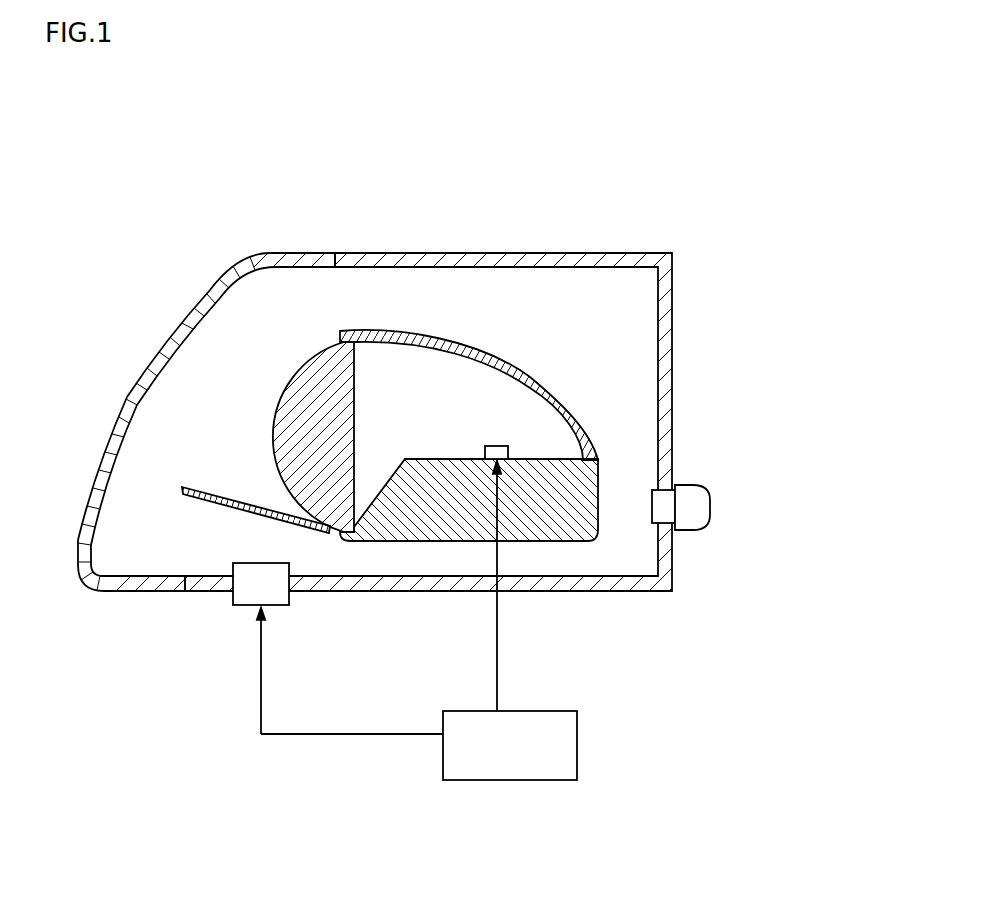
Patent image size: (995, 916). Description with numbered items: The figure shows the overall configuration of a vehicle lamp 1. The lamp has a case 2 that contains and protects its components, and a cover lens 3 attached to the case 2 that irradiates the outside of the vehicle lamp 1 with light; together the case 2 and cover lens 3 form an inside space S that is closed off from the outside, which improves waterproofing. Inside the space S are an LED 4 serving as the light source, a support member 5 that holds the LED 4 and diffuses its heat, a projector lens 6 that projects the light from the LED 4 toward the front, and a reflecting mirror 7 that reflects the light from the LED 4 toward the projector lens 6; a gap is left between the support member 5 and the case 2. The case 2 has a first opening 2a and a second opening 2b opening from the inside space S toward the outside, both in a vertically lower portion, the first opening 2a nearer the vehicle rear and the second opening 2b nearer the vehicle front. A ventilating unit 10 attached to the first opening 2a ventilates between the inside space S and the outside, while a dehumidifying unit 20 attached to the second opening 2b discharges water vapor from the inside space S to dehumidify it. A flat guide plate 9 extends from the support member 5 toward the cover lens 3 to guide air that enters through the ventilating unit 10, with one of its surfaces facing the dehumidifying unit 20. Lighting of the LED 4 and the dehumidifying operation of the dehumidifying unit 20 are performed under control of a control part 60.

The vehicle lamp 1 is at (393, 352).
The case 2 is at (612, 253).
The first opening 2a is at (655, 497).
The second opening 2b is at (247, 580).
The cover lens 3 is at (152, 360).
The LED 4 is at (497, 445).
The support member 5 is at (603, 508).
The projector lens 6 is at (290, 378).
The reflecting mirror 7 is at (438, 333).
The guide plate 9 is at (255, 505).
The ventilating unit 10 is at (721, 469).
The dehumidifying unit 20 is at (218, 623).
The control part 60 is at (578, 742).
The inside space S is at (291, 315).